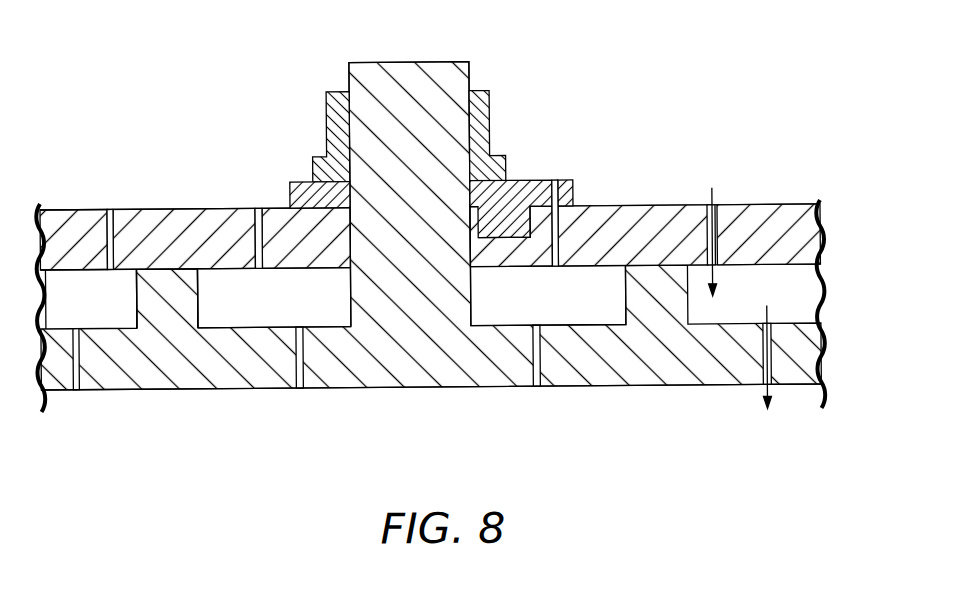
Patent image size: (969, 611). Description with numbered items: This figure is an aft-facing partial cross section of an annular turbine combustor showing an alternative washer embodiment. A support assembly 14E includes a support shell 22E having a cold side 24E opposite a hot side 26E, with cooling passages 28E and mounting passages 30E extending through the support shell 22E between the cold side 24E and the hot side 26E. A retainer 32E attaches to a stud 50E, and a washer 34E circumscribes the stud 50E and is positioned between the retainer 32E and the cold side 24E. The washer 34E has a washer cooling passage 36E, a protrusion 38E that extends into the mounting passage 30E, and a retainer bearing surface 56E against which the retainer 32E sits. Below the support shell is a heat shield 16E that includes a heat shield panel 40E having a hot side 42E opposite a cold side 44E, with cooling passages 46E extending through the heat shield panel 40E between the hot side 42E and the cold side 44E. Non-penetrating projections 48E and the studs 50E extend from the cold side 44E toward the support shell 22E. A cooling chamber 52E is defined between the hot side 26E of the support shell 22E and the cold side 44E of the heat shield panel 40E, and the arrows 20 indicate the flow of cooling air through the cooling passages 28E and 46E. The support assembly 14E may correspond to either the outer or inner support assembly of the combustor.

The support assembly 14E is at (154, 131).
The heat shield 16E is at (318, 440).
The fluid flow arrows 20 is at (712, 195).
The support shell 22E is at (177, 208).
The cold side 24E is at (80, 208).
The hot side 26E is at (92, 272).
The cooling passages 28E is at (713, 229).
The mounting passages 30E is at (330, 269).
The retainer 32E is at (492, 112).
The washer 34E is at (289, 194).
The washer cooling passage 36E is at (573, 192).
The protrusion 38E is at (507, 244).
The heat shield panel 40E is at (233, 390).
The hot side 42E is at (125, 391).
The cold side 44E is at (268, 329).
The cooling passages 46E is at (542, 367).
The non-penetrating projections 48E is at (197, 294).
The stud 50E is at (383, 63).
The cooling chamber 52E is at (567, 322).
The retainer bearing surface 56E is at (527, 179).